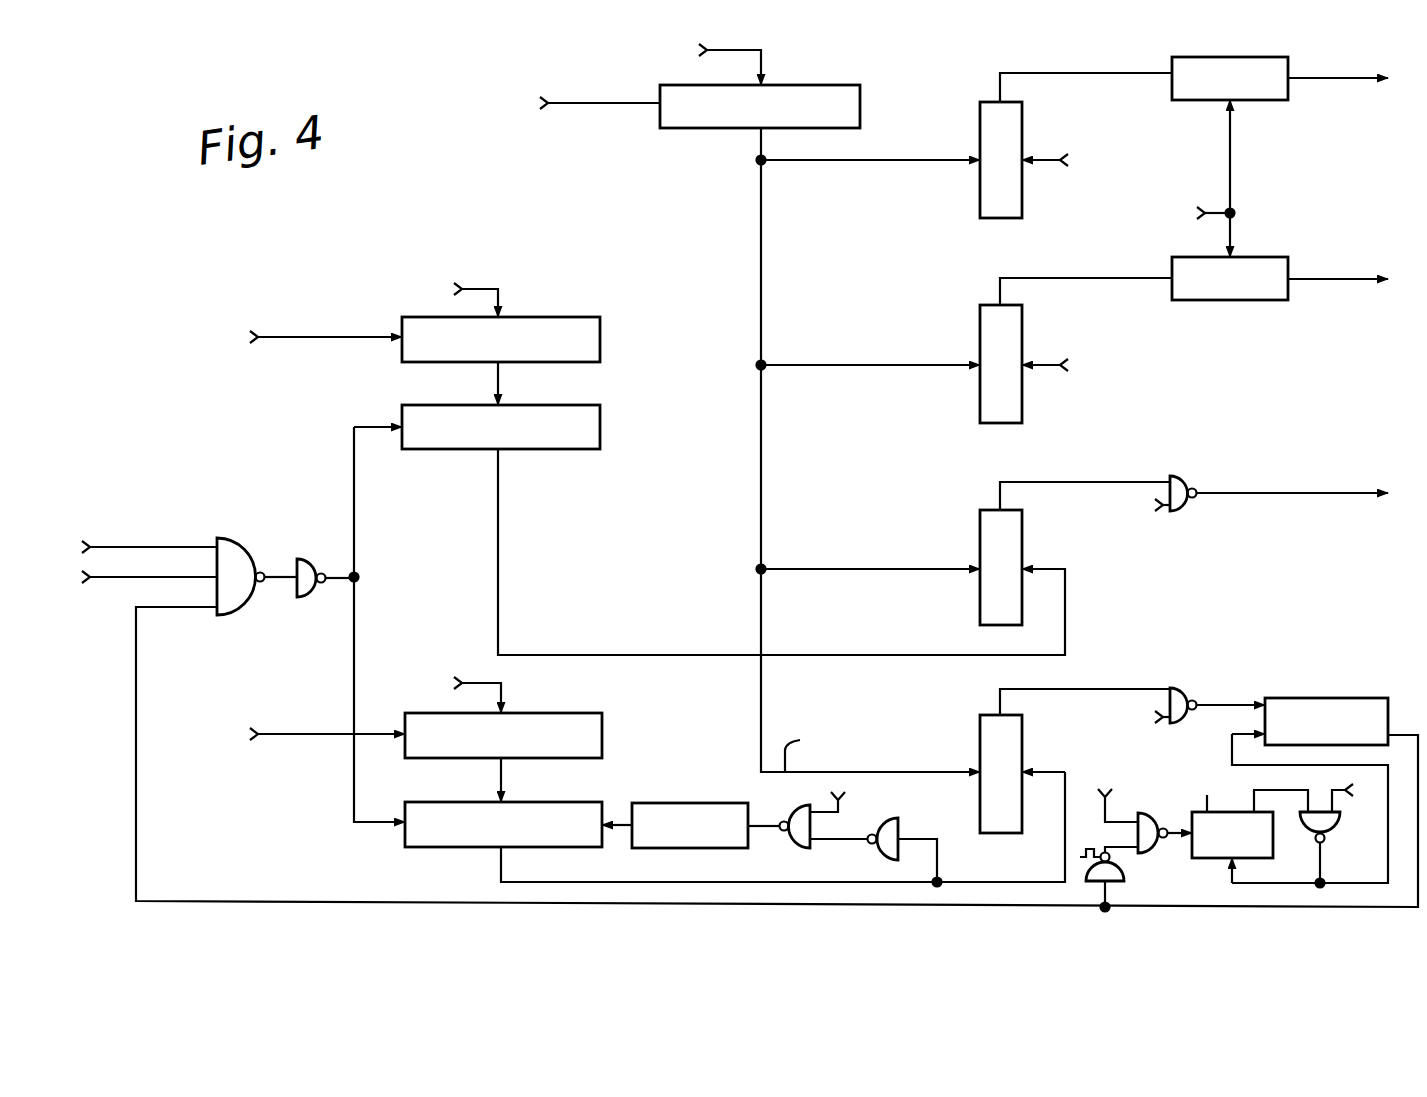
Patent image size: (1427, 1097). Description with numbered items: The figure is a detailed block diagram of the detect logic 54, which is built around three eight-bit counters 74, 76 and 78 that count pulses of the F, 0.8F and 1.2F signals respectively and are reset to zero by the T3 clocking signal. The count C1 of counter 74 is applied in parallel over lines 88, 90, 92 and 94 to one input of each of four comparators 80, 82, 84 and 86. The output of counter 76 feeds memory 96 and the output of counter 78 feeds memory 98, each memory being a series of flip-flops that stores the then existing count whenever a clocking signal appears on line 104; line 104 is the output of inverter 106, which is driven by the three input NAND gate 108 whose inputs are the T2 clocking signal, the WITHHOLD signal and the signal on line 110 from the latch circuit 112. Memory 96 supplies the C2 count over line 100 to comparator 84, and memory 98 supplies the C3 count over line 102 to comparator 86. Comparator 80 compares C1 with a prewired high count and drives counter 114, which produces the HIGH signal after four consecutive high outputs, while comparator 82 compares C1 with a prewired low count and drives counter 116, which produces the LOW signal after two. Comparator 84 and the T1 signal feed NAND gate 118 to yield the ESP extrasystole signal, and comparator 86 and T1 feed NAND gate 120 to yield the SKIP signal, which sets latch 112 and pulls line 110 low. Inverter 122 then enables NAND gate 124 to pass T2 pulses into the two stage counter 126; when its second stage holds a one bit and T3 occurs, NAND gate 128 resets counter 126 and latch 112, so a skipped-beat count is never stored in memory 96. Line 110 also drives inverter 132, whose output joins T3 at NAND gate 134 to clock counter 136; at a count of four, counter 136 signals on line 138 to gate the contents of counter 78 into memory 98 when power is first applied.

The detect logic 54 is at (700, 232).
The eight-bit counter 74 is at (822, 85).
The eight-bit counter 76 is at (560, 317).
The eight-bit counter 78 is at (570, 713).
The comparator 80 is at (980, 118).
The comparator 82 is at (980, 318).
The comparator 84 is at (980, 523).
The comparator 86 is at (980, 726).
The line 88 is at (815, 162).
The line 90 is at (800, 367).
The line 92 is at (800, 571).
The line 94 is at (873, 748).
The memory 96 is at (600, 418).
The memory 98 is at (572, 802).
The line 100 is at (655, 655).
The line 102 is at (720, 880).
The line 104 is at (375, 427).
The inverter 106 is at (305, 559).
The three input NAND gate 108 is at (240, 538).
The line 110 is at (1418, 725).
The latch circuit 112 is at (1345, 698).
The counter 114 is at (1278, 102).
The counter 116 is at (1275, 302).
The NAND gate 118 is at (1183, 512).
The NAND gate 120 is at (1182, 688).
The inverter 122 is at (1124, 878).
The NAND gate 124 is at (1148, 813).
The two stage counter 126 is at (1240, 812).
The NAND gate 128 is at (1336, 830).
The inverter 132 is at (900, 822).
The NAND gate 134 is at (800, 810).
The counter 136 is at (695, 803).
The line 138 is at (622, 825).